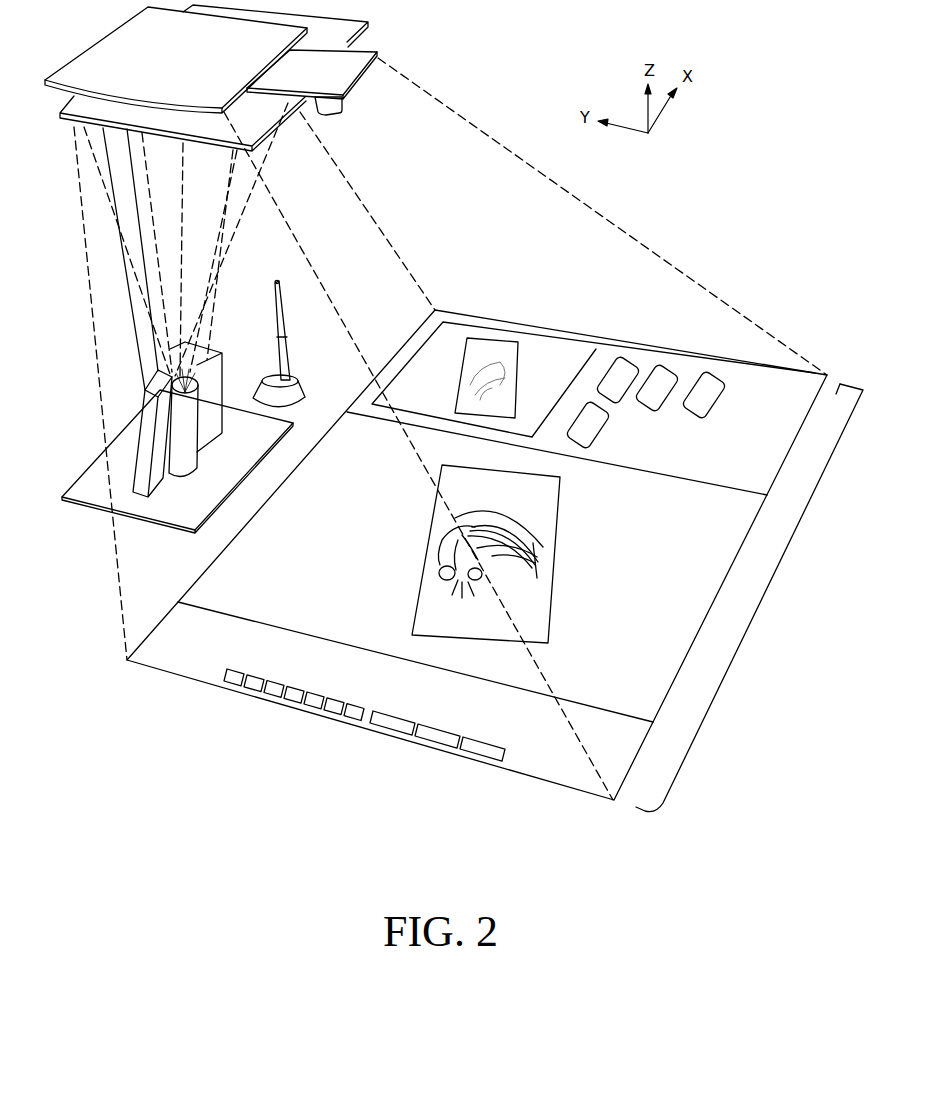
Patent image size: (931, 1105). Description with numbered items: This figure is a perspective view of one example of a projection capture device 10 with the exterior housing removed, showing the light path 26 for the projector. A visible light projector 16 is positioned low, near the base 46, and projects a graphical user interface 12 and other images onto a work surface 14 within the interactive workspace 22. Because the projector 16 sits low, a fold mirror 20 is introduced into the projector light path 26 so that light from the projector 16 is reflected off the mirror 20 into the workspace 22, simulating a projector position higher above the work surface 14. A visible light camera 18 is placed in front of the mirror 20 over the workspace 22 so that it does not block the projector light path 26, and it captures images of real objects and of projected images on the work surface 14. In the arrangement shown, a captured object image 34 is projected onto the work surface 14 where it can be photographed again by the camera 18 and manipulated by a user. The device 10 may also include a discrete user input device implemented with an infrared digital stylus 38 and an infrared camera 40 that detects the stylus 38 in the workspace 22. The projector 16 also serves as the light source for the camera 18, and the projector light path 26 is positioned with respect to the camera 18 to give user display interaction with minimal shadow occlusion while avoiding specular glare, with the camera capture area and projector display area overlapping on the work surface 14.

The projection capture device 10 is at (56, 206).
The graphical user interface 12 is at (612, 353).
The work surface 14 is at (643, 579).
The visible light projector 16 is at (177, 465).
The visible light camera 18 is at (332, 107).
The fold mirror 20 is at (60, 115).
The workspace 22 is at (588, 240).
The projector light path 26 is at (663, 267).
The object image 34 is at (547, 500).
The infrared digital stylus 38 is at (273, 357).
The infrared camera 40 is at (150, 414).
The base 46 is at (98, 497).